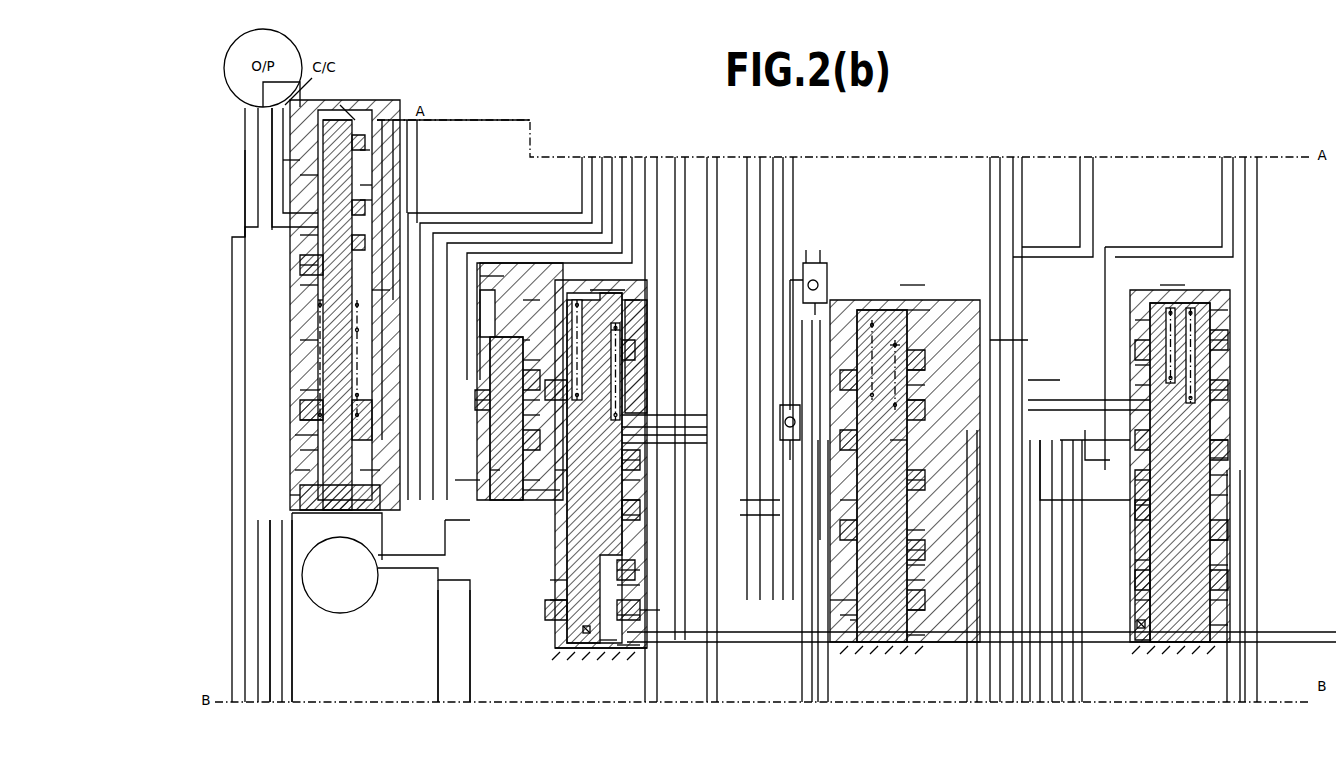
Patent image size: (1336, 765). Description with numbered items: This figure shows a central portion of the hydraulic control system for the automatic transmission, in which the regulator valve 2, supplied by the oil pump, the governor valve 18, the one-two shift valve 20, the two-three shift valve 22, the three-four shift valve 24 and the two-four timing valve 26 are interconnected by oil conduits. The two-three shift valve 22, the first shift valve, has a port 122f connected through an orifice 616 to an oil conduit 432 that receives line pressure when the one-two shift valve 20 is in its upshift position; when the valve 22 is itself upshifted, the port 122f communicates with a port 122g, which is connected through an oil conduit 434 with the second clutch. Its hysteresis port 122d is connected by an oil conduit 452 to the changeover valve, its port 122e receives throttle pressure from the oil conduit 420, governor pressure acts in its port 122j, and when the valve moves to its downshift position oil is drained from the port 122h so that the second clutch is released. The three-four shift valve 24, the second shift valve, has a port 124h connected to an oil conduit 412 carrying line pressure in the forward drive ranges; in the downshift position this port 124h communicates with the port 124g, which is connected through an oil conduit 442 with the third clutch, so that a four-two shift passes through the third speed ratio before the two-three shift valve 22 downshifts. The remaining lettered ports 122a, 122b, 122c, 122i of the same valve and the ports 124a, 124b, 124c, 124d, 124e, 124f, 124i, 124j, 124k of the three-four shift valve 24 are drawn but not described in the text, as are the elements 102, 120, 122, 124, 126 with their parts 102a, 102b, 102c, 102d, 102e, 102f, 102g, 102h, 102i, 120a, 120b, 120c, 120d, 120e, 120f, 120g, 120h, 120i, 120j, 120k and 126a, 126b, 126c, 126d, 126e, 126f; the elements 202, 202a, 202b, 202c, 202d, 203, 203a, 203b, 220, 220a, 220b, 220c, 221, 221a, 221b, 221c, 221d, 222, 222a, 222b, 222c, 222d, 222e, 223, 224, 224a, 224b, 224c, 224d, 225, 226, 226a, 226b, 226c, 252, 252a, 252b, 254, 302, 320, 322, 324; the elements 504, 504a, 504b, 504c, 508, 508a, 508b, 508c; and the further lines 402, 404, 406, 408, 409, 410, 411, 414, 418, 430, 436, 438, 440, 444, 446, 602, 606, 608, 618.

The regulator valve 2 is at (365, 54).
The governor valve 18 is at (375, 595).
The 1-2 shift valve 20 is at (1175, 289).
The 2-3 shift valve 22 is at (900, 300).
The 3-4 shift valve 24 is at (595, 295).
The 2-4 timing valve 26 is at (495, 285).
The valve bore 102 is at (372, 318).
The valve bore 120 is at (1215, 420).
The valve bore 122 is at (857, 405).
The valve bore 124 is at (630, 604).
The valve bore 126 is at (495, 335).
The valve spool 202 is at (372, 220).
The plunger 203 is at (335, 365).
The valve spool 220 is at (1215, 380).
The plunger 221 is at (1140, 585).
The valve spool 222 is at (870, 645).
The spring 223 is at (900, 330).
The valve spool 224 is at (577, 645).
The spring 225 is at (625, 330).
The valve spool 226 is at (495, 500).
The plug 252 is at (365, 512).
The spring seat 254 is at (300, 396).
The spring 302 is at (360, 330).
The spring 320 is at (1192, 308).
The spring 322 is at (900, 350).
The spring 324 is at (618, 345).
The line 402 is at (250, 208).
The line 404 is at (272, 133).
The line 406 is at (395, 143).
The line 408 is at (1250, 660).
The line 409 is at (972, 258).
The line 410 is at (292, 657).
The line 411 is at (270, 690).
The oil conduit 412 is at (450, 546).
The line 414 is at (855, 370).
The line 418 is at (910, 360).
The oil conduit 420 is at (612, 184).
The line 430 is at (432, 595).
The oil conduit 432 is at (1010, 680).
The oil conduit 434 is at (430, 338).
The line 436 is at (1088, 445).
The line 438 is at (1105, 287).
The line 440 is at (740, 420).
The oil conduit 442 is at (675, 195).
The sleeve 444 is at (647, 350).
The line 446 is at (545, 500).
The oil conduit 452 is at (1048, 460).
The orifice 504 is at (828, 278).
The orifice 508 is at (780, 410).
The line 602 is at (480, 470).
The line 606 is at (283, 157).
The line 608 is at (372, 285).
The orifice 616 is at (855, 510).
The line 618 is at (560, 500).
The port 102a is at (345, 110).
The port 102b is at (365, 150).
The port 102c is at (372, 185).
The port 102d is at (372, 200).
The port 102e is at (310, 262).
The port 102f is at (312, 280).
The port 102g is at (305, 360).
The port 102h is at (300, 470).
The port 102i is at (295, 500).
The port 120a is at (1205, 315).
The port 120b is at (1215, 355).
The port 120c is at (1215, 400).
The port 120d is at (1215, 445).
The port 120e is at (1215, 462).
The port 120f is at (1215, 478).
The port 120g is at (1215, 500).
The port 120h is at (1215, 545).
The port 120i is at (1215, 568).
The port 120j is at (1215, 605).
The port 120k is at (1215, 630).
The port 122a is at (915, 312).
The port 122b is at (920, 395).
The port 122c is at (920, 410).
The port 122d is at (920, 485).
The port 122e is at (915, 535).
The port 122f is at (915, 555).
The port 122g is at (915, 570).
The port 122h is at (915, 585).
The port 122i is at (920, 612).
The port 122j is at (928, 640).
The port 124a is at (630, 296).
The port 124b is at (630, 410).
The port 124c is at (625, 430).
The port 124d is at (640, 478).
The port 124e is at (640, 500).
The port 124f is at (640, 515).
The port 124g is at (700, 560).
The port 124h is at (640, 570).
The port 124i is at (640, 585).
The port 124j is at (640, 615).
The port 124k is at (665, 650).
The port 126a is at (570, 300).
The port 126b is at (520, 380).
The port 126c is at (520, 410).
The port 126d is at (530, 430).
The port 126e is at (520, 490).
The port 126f is at (528, 495).
The land 202a is at (326, 120).
The land 202b is at (318, 183).
The land 202c is at (318, 230).
The land 202d is at (320, 295).
The land 203a is at (315, 430).
The land 203b is at (310, 480).
The land 220a is at (1150, 318).
The land 220b is at (1150, 360).
The land 220c is at (1150, 390).
The land 221a is at (1140, 475).
The land 221b is at (1140, 505).
The land 221c is at (1140, 562).
The land 221d is at (1140, 600).
The land 222a is at (920, 378).
The land 222b is at (895, 445).
The land 222c is at (845, 580).
The land 222d is at (840, 660).
The land 222e is at (855, 645).
The land 224a is at (610, 465).
The land 224b is at (565, 572).
The land 224c is at (565, 590).
The land 224d is at (612, 645).
The land 226a is at (505, 340).
The land 226b is at (488, 420).
The land 226c is at (490, 475).
The land 252a is at (385, 480).
The land 252b is at (300, 490).
The orifice passage 504a is at (822, 300).
The orifice passage 504b is at (822, 258).
The orifice passage 504c is at (806, 262).
The orifice passage 508a is at (785, 445).
The orifice passage 508b is at (750, 493).
The orifice passage 508c is at (750, 509).